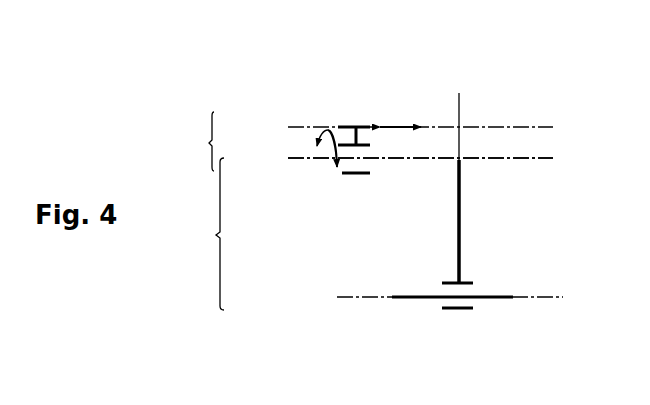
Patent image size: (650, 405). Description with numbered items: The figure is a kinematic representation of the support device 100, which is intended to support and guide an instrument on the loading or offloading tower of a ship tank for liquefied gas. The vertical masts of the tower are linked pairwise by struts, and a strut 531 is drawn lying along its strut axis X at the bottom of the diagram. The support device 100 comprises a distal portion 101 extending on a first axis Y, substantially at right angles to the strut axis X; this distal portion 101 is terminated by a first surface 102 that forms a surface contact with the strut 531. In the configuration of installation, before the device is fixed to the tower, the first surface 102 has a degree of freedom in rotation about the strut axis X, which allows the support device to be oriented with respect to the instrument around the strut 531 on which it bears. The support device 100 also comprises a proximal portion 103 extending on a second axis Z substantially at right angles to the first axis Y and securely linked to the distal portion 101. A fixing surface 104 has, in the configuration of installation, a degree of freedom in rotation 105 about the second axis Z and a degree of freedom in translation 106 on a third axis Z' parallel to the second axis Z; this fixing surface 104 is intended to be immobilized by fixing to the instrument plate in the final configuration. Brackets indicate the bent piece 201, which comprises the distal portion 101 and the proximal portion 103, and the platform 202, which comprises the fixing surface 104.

The support device 100 is at (281, 50).
The distal portion 101 is at (463, 217).
The first surface 102 is at (468, 280).
The proximal portion 103 is at (415, 163).
The fixing surface 104 is at (350, 123).
The degree of freedom in rotation 105 is at (328, 177).
The degree of freedom in translation 106 is at (402, 122).
The bent piece 201 is at (202, 234).
The platform 202 is at (195, 141).
The strut 531 is at (419, 293).